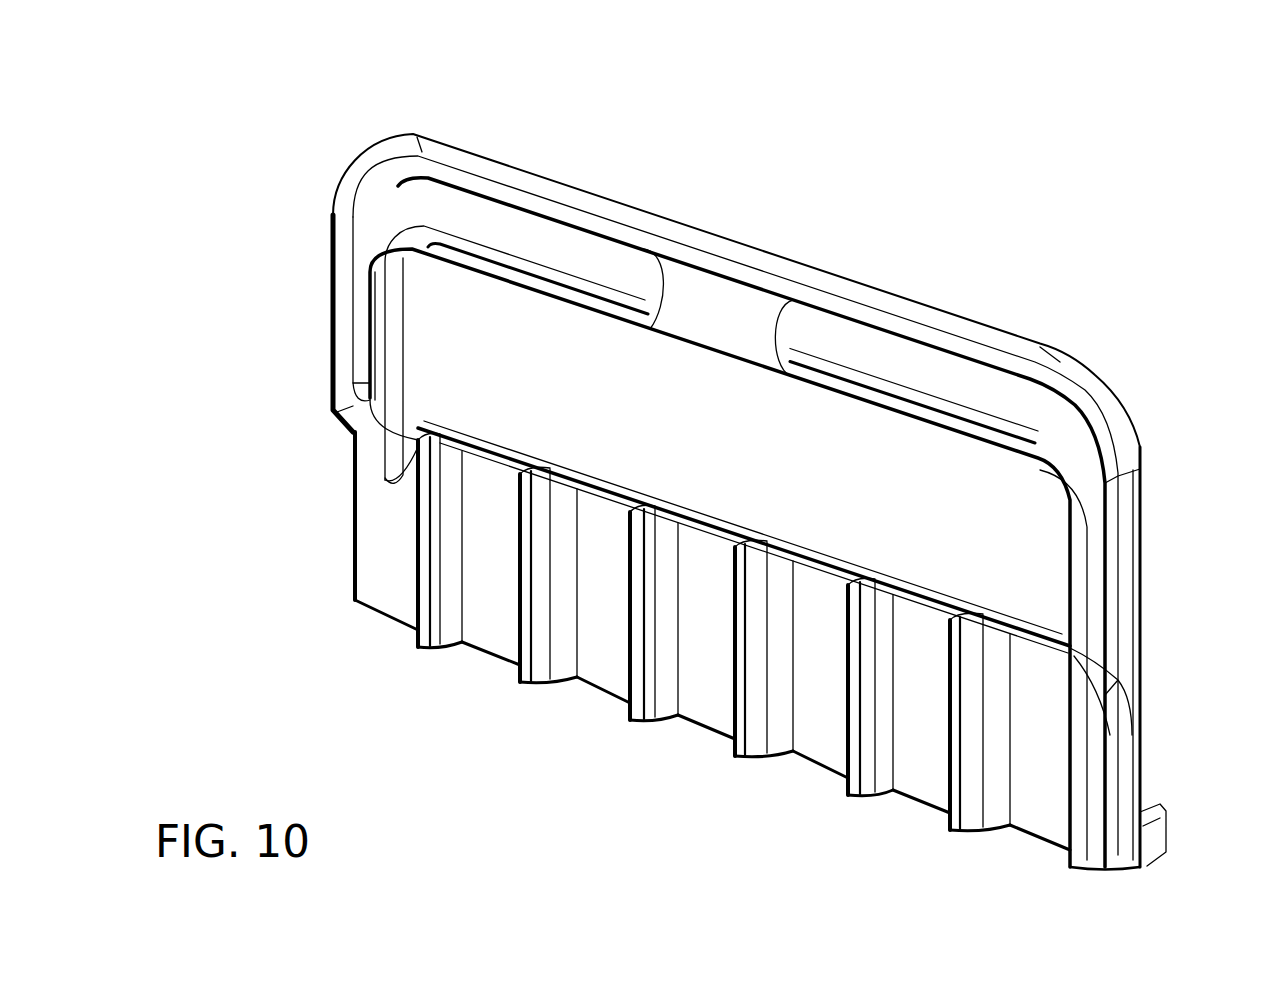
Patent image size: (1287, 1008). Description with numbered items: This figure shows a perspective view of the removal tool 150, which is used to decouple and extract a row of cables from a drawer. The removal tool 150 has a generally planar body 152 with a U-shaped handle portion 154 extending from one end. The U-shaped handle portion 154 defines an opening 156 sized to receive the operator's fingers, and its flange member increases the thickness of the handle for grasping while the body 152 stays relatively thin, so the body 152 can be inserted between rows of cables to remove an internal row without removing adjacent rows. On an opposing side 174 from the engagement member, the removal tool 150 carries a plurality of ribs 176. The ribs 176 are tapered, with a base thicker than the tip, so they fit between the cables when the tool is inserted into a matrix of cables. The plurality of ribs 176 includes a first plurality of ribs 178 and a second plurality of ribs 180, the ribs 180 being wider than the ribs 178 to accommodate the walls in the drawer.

The removal tool 150 is at (283, 104).
The body 152 is at (352, 572).
The U-shaped handle portion 154 is at (333, 213).
The opening 156 is at (1008, 546).
The opposing side 174 is at (380, 512).
The ribs 176 is at (585, 760).
The first plurality of ribs 178 is at (428, 648).
The second plurality of ribs 180 is at (548, 690).